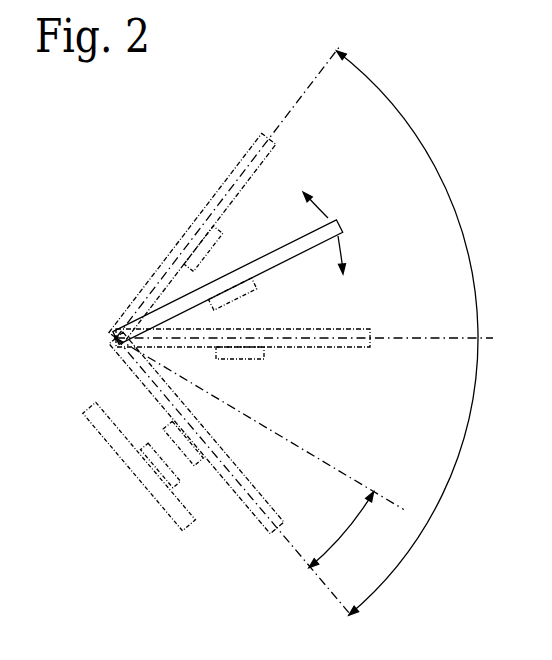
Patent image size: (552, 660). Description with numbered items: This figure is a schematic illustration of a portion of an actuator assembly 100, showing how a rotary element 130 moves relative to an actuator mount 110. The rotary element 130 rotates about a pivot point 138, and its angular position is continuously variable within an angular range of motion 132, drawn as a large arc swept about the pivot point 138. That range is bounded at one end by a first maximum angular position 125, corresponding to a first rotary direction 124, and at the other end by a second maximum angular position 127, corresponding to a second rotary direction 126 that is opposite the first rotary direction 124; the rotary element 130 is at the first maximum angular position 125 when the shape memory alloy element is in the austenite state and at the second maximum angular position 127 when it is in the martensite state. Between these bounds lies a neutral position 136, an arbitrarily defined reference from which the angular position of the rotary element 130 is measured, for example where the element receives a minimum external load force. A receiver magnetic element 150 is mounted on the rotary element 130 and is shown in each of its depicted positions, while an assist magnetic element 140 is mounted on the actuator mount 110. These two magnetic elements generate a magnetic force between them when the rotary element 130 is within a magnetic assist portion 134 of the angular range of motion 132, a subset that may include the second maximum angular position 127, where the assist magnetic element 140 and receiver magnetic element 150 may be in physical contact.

The actuator assembly 100 is at (158, 111).
The actuator mount 110 is at (125, 463).
The first rotary direction 124 is at (325, 214).
The first maximum angular position 125 is at (228, 178).
The second rotary direction 126 is at (347, 252).
The second maximum angular position 127 is at (272, 532).
The rotary element 130 is at (338, 220).
The angular range of motion 132 is at (433, 150).
The magnetic assist portion 134 is at (331, 548).
The neutral position 136 is at (335, 348).
The pivot point 138 is at (113, 337).
The assist magnetic element 140 is at (172, 485).
The receiver magnetic element 150 is at (210, 254).